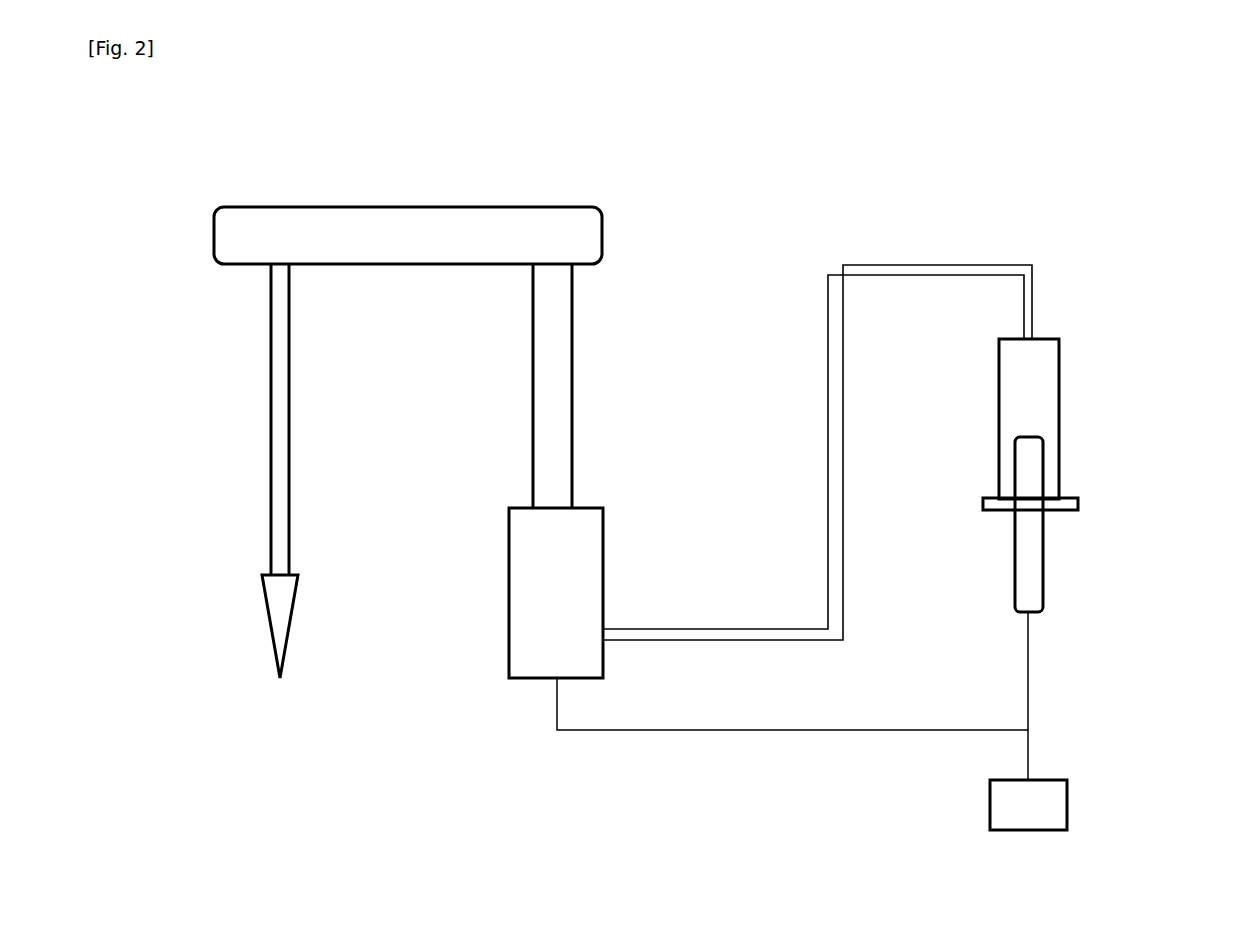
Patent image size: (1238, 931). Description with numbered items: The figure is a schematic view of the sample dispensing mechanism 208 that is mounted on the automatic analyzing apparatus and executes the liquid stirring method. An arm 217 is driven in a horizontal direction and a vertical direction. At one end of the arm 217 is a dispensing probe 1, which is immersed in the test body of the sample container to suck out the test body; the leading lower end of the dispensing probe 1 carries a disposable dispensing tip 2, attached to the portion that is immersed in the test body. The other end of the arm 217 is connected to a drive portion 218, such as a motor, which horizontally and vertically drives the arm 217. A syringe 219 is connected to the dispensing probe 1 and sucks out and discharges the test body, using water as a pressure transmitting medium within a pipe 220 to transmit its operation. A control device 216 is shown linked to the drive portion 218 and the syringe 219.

The sample dispensing mechanism 208 is at (645, 182).
The arm 217 is at (345, 232).
The dispensing probe 1 is at (280, 375).
The disposable dispensing tip 2 is at (280, 618).
The drive portion 218 is at (590, 552).
The pipe 220 is at (890, 262).
The syringe 219 is at (1040, 355).
The control device 216 is at (812, 721).